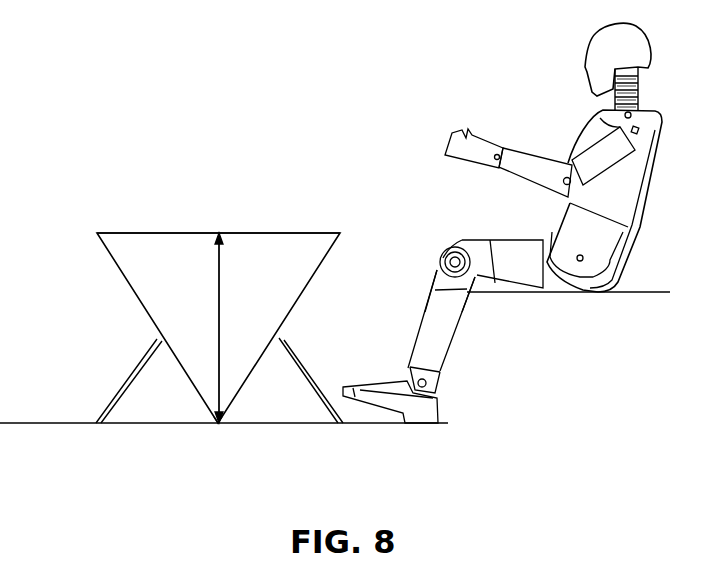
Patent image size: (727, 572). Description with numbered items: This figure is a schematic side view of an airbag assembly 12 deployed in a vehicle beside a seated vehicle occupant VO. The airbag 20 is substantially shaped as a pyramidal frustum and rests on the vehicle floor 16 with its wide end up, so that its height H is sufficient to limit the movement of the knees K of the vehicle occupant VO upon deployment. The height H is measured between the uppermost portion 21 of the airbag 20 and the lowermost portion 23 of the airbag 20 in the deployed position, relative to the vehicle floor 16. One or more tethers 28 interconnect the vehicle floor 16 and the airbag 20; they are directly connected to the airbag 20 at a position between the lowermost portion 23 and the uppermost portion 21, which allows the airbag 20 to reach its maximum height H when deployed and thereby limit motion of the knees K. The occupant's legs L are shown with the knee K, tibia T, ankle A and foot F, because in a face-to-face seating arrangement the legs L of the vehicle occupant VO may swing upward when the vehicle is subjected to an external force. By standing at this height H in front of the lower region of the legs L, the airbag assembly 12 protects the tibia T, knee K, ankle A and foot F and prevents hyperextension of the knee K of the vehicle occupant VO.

The airbag assembly 12 is at (118, 203).
The vehicle floor 16 is at (292, 416).
The airbag 20 is at (300, 233).
The uppermost portion 21 is at (219, 232).
The lowermost portion 23 is at (219, 426).
The tethers 28 is at (142, 350).
The height H is at (218, 272).
The vehicle occupant VO is at (557, 157).
The knee K is at (450, 252).
The tibia T is at (430, 307).
The leg L is at (455, 330).
The ankle A is at (430, 393).
The foot F is at (370, 387).